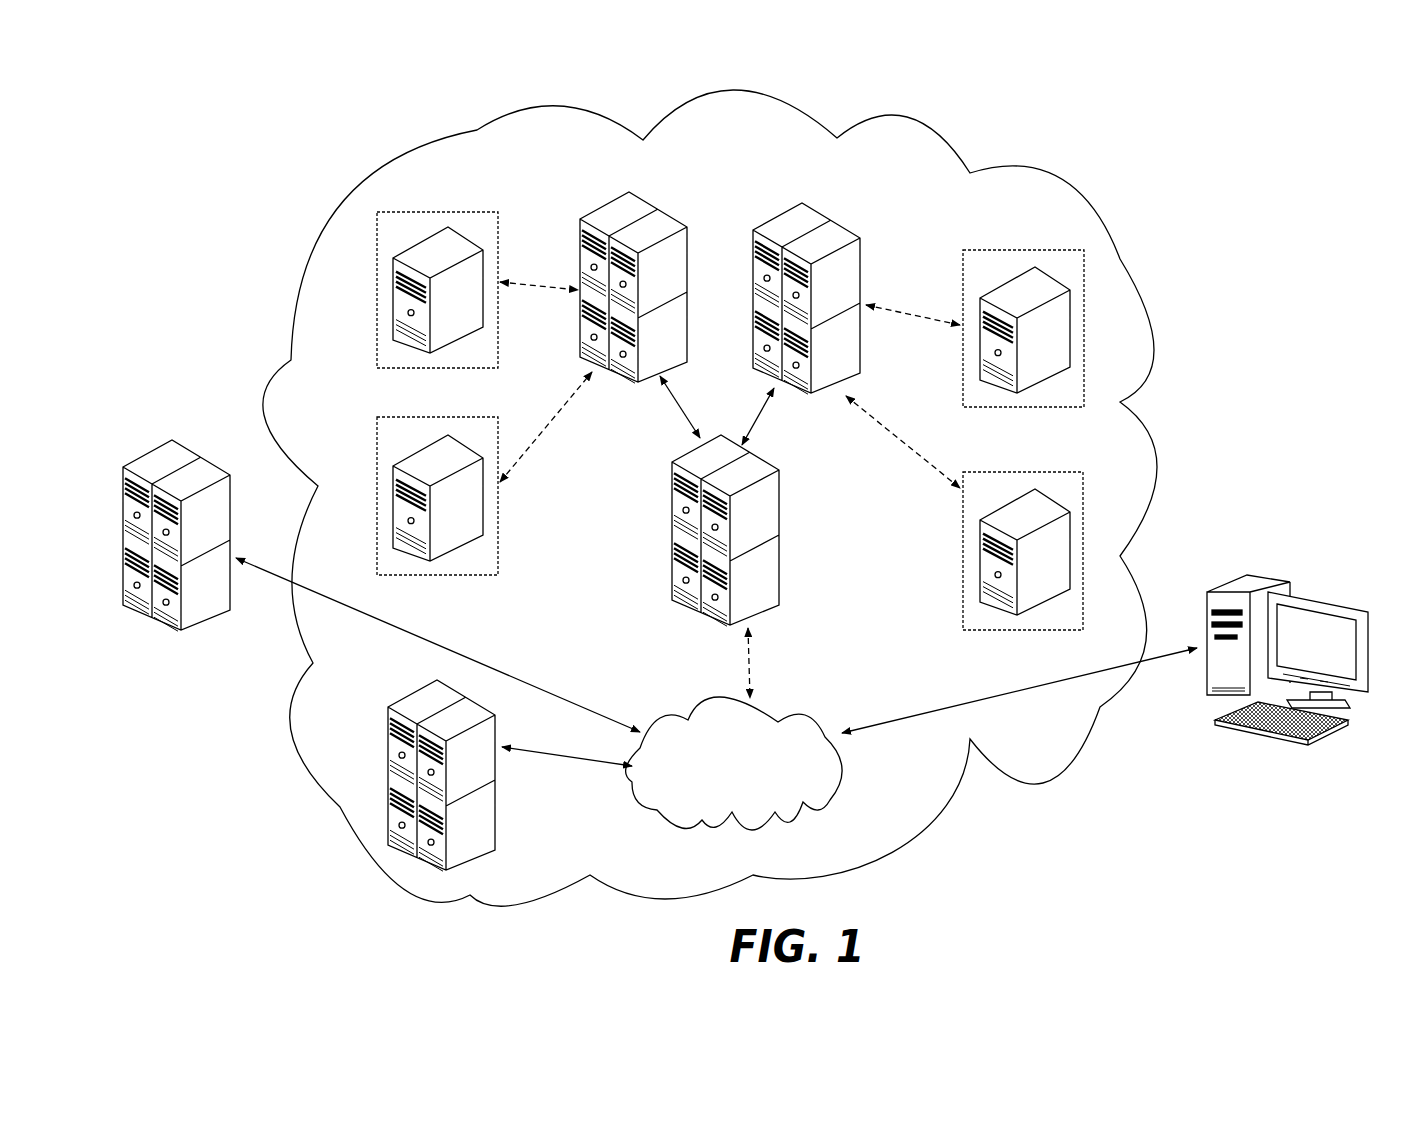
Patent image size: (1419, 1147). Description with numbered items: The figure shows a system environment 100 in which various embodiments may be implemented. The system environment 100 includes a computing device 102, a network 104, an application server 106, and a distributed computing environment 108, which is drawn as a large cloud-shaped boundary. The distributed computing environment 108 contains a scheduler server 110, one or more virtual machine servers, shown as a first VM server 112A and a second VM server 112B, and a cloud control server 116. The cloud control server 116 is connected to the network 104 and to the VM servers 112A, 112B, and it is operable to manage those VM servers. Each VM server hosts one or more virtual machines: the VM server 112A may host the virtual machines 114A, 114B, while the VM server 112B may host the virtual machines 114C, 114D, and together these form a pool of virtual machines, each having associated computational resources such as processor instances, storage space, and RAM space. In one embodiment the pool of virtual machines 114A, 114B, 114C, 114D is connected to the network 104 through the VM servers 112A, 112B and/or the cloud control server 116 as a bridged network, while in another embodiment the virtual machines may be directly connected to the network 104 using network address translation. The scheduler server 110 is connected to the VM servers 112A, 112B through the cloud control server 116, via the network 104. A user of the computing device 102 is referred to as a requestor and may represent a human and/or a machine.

The system environment 100 is at (265, 157).
The computing device 102 is at (1327, 595).
The network 104 is at (698, 705).
The application server 106 is at (172, 630).
The distributed computing environment 108 is at (930, 828).
The scheduler server 110 is at (425, 688).
The VM server 112A is at (686, 295).
The VM server 112B is at (862, 350).
The virtual machine 114A is at (498, 334).
The virtual machine 114B is at (498, 540).
The virtual machine 114C is at (962, 290).
The virtual machine 114D is at (962, 576).
The cloud control server 116 is at (780, 505).